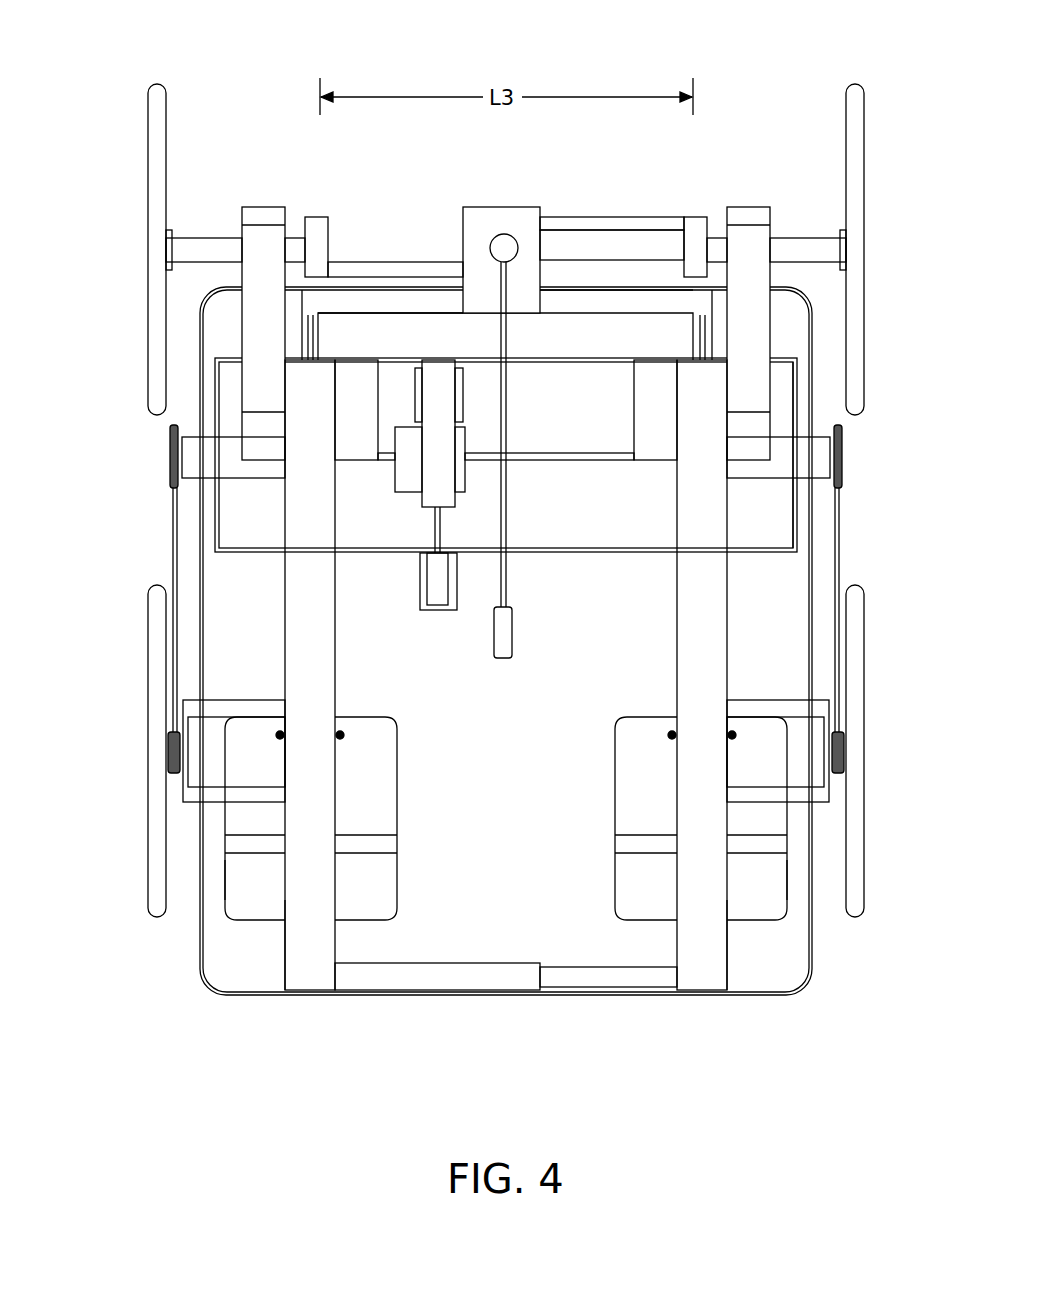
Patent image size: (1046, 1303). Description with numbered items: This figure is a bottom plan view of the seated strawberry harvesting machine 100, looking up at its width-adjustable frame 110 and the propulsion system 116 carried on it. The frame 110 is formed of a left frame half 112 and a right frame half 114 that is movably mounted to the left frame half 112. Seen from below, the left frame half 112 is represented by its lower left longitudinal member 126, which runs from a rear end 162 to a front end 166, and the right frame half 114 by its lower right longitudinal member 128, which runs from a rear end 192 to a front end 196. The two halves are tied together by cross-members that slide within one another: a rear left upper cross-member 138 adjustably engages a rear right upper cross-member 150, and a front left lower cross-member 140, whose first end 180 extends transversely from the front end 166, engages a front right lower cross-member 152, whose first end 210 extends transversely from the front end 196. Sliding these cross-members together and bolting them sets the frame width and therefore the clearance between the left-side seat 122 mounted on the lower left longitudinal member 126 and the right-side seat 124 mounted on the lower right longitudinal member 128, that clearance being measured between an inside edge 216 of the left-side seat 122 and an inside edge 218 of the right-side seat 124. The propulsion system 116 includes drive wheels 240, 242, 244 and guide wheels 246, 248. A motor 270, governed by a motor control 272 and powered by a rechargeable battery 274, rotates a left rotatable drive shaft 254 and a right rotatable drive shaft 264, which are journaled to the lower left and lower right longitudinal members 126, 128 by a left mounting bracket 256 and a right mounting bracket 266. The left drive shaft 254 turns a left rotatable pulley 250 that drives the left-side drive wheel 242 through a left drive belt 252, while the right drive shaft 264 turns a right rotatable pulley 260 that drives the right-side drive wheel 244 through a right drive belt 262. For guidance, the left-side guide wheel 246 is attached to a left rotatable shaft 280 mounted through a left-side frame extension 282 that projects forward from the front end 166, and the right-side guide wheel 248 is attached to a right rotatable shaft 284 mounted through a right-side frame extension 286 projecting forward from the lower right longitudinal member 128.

The harvesting machine 100 is at (158, 48).
The frame 110 is at (333, 1050).
The left frame half 112 is at (123, 589).
The right frame half 114 is at (883, 606).
The propulsion system 116 is at (123, 526).
The left-side seat 122 is at (382, 893).
The right-side seat 124 is at (625, 894).
The lower left longitudinal member 126 is at (303, 628).
The lower right longitudinal member 128 is at (697, 640).
The rear left upper cross-member 138 is at (440, 974).
The front left lower cross-member 140 is at (390, 305).
The rear right upper cross-member 150 is at (594, 977).
The front right lower cross-member 152 is at (585, 300).
The rear end of lower left longitudinal member 162 is at (305, 973).
The front end of lower left longitudinal member 166 is at (303, 378).
The first end of front left lower cross-member 180 is at (330, 305).
The rear end of lower right longitudinal member 192 is at (703, 975).
The front end of lower right longitudinal member 196 is at (710, 378).
The first end of front right lower cross-member 210 is at (655, 300).
The inside edge of left-side seat 216 is at (397, 775).
The inside edge of right-side seat 218 is at (617, 796).
The left-side drive wheel 240 is at (148, 979).
The left-side drive wheel 242 is at (155, 900).
The right-side drive wheel 244 is at (860, 900).
The left-side guide wheel 246 is at (157, 127).
The right-side guide wheel 248 is at (855, 127).
The left rotatable pulley 250 is at (169, 456).
The left drive belt 252 is at (170, 541).
The left rotatable drive shaft 254 is at (386, 460).
The left mounting bracket 256 is at (198, 452).
The right rotatable pulley 260 is at (843, 477).
The right drive belt 262 is at (843, 553).
The right rotatable drive shaft 264 is at (578, 460).
The right mounting bracket 266 is at (808, 450).
The motor 270 is at (411, 483).
The motor control 272 is at (432, 602).
The battery 274 is at (415, 397).
The left rotatable shaft 280 is at (195, 248).
The left-side frame extension 282 is at (255, 213).
The right rotatable shaft 284 is at (795, 248).
The right-side frame extension 286 is at (748, 215).